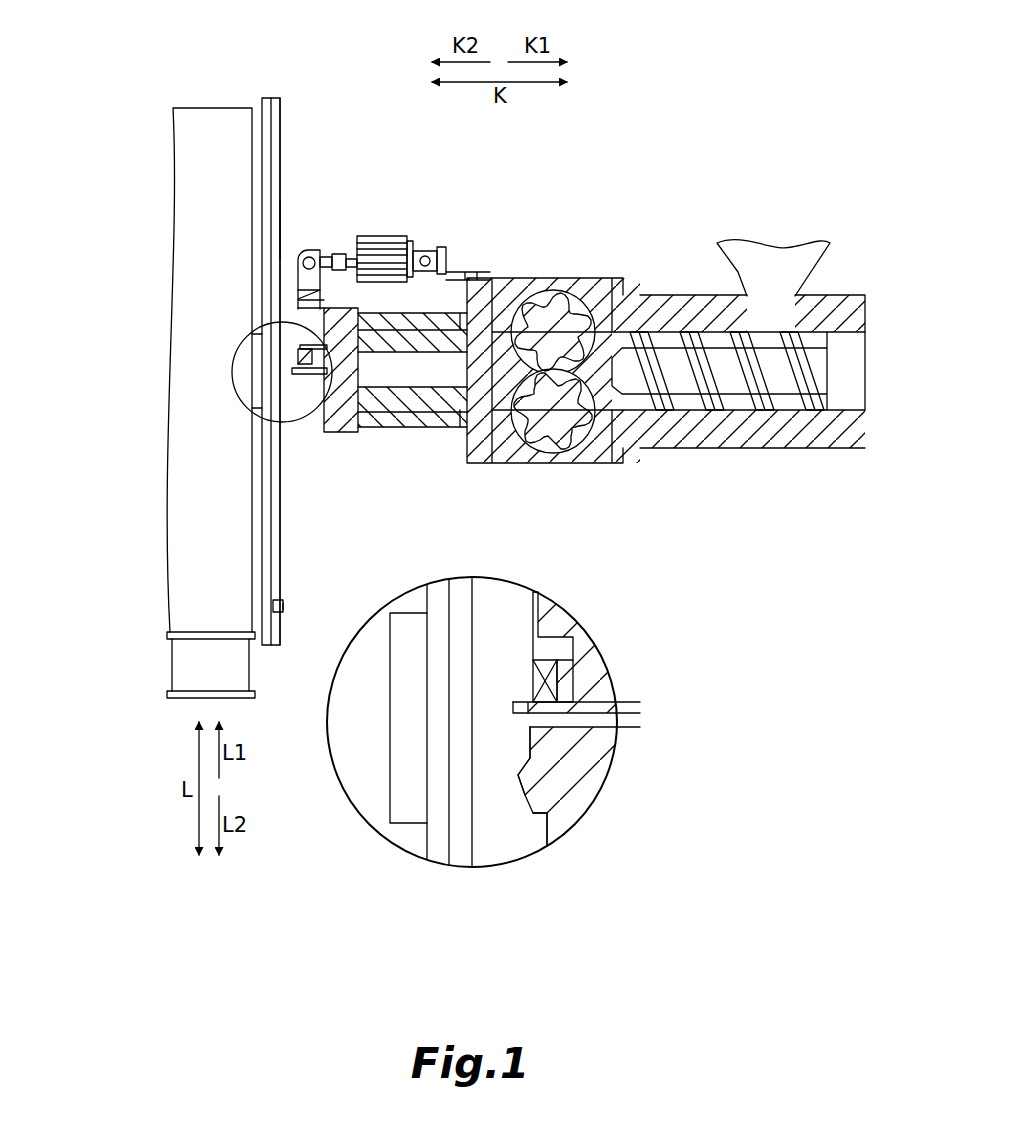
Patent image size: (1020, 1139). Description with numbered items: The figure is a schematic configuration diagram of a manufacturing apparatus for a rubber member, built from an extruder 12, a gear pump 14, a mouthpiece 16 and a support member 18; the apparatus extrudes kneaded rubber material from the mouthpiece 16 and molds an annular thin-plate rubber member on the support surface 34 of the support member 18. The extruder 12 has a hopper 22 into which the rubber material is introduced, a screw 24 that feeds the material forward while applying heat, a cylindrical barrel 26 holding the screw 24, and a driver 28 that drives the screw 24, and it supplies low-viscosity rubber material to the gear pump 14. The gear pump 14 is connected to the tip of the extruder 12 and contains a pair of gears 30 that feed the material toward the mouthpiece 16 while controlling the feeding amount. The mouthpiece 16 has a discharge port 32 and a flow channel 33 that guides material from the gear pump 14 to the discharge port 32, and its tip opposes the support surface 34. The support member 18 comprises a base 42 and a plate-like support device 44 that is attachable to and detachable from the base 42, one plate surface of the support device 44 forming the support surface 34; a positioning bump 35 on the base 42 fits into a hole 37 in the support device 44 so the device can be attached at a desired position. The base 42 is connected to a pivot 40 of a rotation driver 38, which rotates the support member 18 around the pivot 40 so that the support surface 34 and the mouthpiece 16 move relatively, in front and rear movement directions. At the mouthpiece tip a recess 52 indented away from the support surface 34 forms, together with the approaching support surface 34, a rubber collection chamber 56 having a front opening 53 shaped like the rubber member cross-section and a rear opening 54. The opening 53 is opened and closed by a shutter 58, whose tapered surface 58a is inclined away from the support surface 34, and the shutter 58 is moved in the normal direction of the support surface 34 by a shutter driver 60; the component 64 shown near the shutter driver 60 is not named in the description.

The extruder 12 is at (667, 294).
The gear pump 14 is at (546, 276).
The mouthpiece 16 is at (350, 438).
The support member 18 is at (288, 104).
The hopper 22 is at (743, 262).
The screw 24 is at (688, 380).
The barrel 26 is at (754, 441).
The driver 28 is at (848, 385).
The gears 30 is at (568, 318).
The discharge port 32 is at (294, 373).
The flow channel 33 is at (575, 722).
The support surface 34 is at (281, 230).
The positioning bump 35 is at (284, 607).
The hole 37 is at (279, 601).
The rotation driver 38 is at (200, 183).
The pivot 40 is at (259, 410).
The base 42 is at (268, 97).
The support device 44 is at (275, 97).
The recess 52 is at (515, 757).
The opening 53 is at (298, 358).
The opening 54 is at (548, 846).
The rubber collection chamber 56 is at (521, 740).
The shutter 58 is at (303, 357).
The tapered surface 58a is at (540, 680).
The shutter driver 60 is at (337, 221).
The cylinder 64 is at (390, 235).